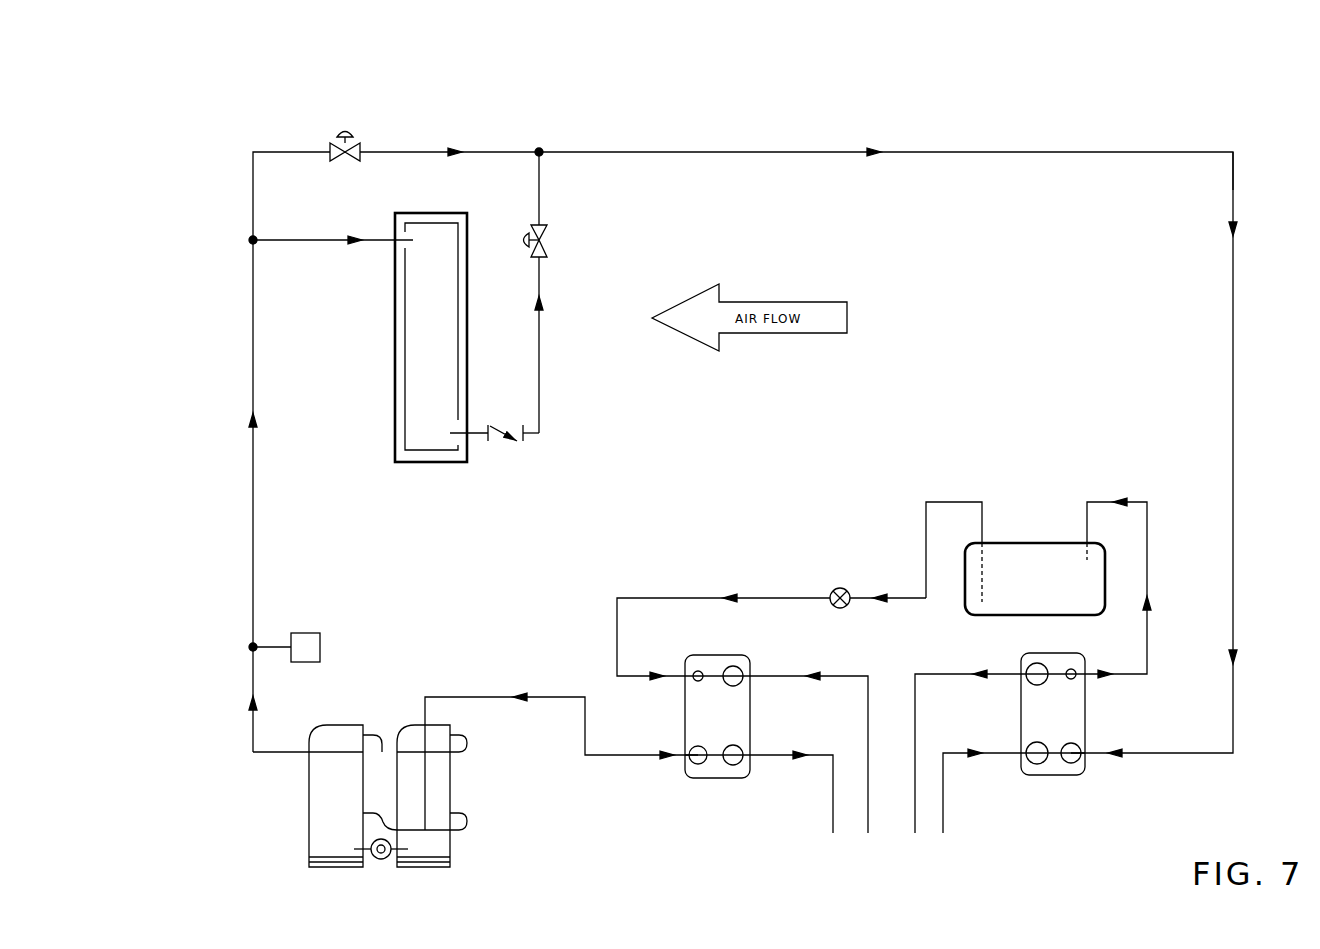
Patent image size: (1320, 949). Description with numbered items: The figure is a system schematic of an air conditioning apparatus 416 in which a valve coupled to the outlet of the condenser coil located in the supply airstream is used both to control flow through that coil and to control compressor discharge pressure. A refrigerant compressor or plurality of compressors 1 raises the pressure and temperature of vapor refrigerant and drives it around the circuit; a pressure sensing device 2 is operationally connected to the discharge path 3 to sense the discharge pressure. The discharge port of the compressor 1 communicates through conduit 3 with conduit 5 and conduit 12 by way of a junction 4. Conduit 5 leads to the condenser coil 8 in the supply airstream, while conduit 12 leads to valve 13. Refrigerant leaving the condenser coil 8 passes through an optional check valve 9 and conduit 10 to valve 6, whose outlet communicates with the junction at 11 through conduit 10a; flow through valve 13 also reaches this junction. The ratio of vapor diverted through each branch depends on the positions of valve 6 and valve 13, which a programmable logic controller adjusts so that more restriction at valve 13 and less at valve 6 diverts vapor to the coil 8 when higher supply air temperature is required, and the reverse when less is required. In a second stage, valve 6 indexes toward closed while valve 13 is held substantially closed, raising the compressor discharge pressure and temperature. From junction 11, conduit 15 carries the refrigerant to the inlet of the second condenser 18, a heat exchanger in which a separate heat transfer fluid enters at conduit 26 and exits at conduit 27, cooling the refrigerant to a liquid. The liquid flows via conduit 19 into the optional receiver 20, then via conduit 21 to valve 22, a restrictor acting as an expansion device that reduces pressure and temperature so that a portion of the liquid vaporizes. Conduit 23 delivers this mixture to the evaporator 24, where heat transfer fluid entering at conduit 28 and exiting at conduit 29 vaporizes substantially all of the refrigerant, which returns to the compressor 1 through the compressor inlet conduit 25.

The compressor 1 is at (360, 761).
The pressure sensing device 2 is at (303, 607).
The discharge path 3 is at (290, 496).
The junction 4 is at (207, 213).
The conduit 5 is at (333, 212).
The valve 6 is at (571, 263).
The condenser coil 8 is at (447, 314).
The check valve 9 is at (517, 470).
The conduit 10 is at (580, 345).
The conduit 10a is at (586, 191).
The junction 11 is at (580, 125).
The conduit 12 is at (271, 168).
The valve 13 is at (434, 123).
The conduit 15 is at (888, 426).
The second condenser 18 is at (1082, 727).
The conduit 19 is at (1144, 555).
The receiver 20 is at (1035, 535).
The conduit 21 is at (973, 517).
The expansion valve 22 is at (868, 570).
The conduit 23 is at (771, 609).
The evaporator 24 is at (745, 729).
The compressor inlet conduit 25 is at (561, 738).
The conduit 26 is at (982, 804).
The conduit 27 is at (948, 751).
The conduit 28 is at (816, 738).
The conduit 29 is at (811, 815).
The apparatus 416 is at (1274, 120).